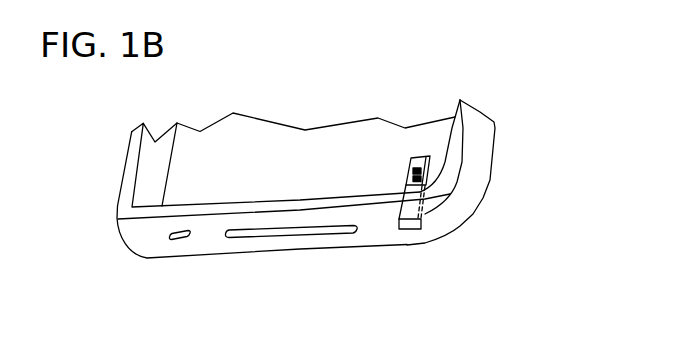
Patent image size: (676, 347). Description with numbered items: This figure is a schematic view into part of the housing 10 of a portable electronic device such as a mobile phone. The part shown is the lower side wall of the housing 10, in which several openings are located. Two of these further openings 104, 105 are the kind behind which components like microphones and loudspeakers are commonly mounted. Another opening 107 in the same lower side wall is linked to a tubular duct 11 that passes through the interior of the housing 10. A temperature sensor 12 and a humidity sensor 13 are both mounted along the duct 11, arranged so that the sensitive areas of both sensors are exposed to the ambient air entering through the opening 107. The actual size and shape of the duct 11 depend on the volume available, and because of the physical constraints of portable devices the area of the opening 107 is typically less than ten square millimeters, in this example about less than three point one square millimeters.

The housing 10 is at (547, 172).
The tubular duct 11 is at (470, 215).
The temperature sensor 12 is at (452, 128).
The humidity sensor 13 is at (406, 180).
The opening 104 is at (162, 237).
The opening 105 is at (320, 235).
The opening 107 is at (399, 229).